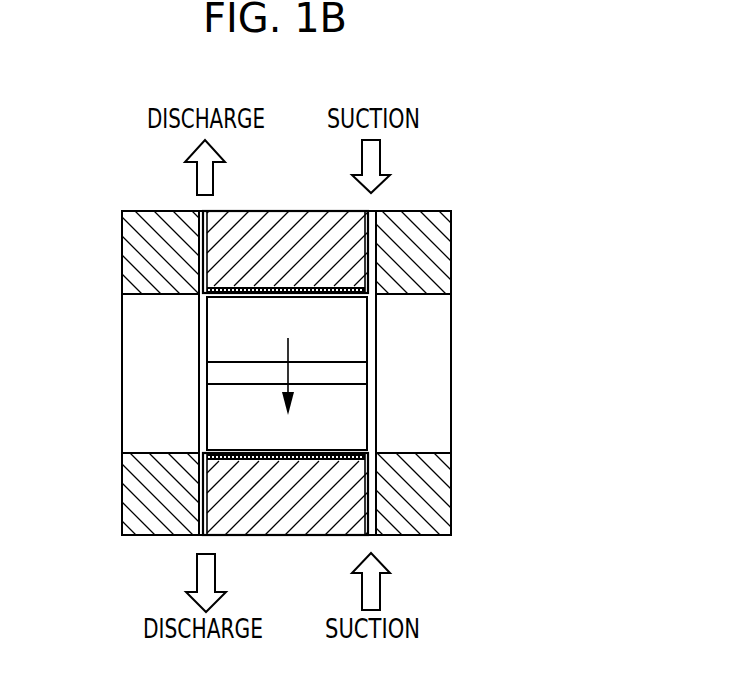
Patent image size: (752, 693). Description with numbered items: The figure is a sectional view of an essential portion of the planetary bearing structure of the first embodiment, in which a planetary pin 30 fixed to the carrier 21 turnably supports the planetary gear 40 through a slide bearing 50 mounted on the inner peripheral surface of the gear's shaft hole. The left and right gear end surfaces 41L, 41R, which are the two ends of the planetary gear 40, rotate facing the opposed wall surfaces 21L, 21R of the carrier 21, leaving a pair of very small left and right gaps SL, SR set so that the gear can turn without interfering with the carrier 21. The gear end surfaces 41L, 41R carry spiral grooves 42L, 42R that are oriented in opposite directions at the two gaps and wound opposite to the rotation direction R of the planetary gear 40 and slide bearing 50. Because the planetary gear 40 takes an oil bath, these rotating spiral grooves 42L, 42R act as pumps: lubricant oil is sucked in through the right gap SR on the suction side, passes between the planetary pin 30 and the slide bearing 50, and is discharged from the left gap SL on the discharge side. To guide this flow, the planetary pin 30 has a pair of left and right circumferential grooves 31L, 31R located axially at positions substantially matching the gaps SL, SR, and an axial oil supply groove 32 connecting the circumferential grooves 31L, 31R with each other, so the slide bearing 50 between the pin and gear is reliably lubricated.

The planetary pin 30 is at (452, 340).
The left gear end surface 41L is at (132, 222).
The spiral groove 42L is at (200, 230).
The right gear end surface 41R is at (458, 250).
The spiral groove 42R is at (377, 231).
The wall surface 21L is at (326, 231).
The wall surface 21R is at (326, 231).
The carrier 21 is at (433, 535).
The slide bearing 50 is at (330, 294).
The oil supply groove 32 is at (357, 373).
The circumferential groove 31L is at (200, 416).
The circumferential groove 31R is at (372, 418).
The planetary gear 40 is at (290, 535).
The left gap SL is at (203, 211).
The right gap SR is at (372, 211).
The rotation direction R is at (290, 348).